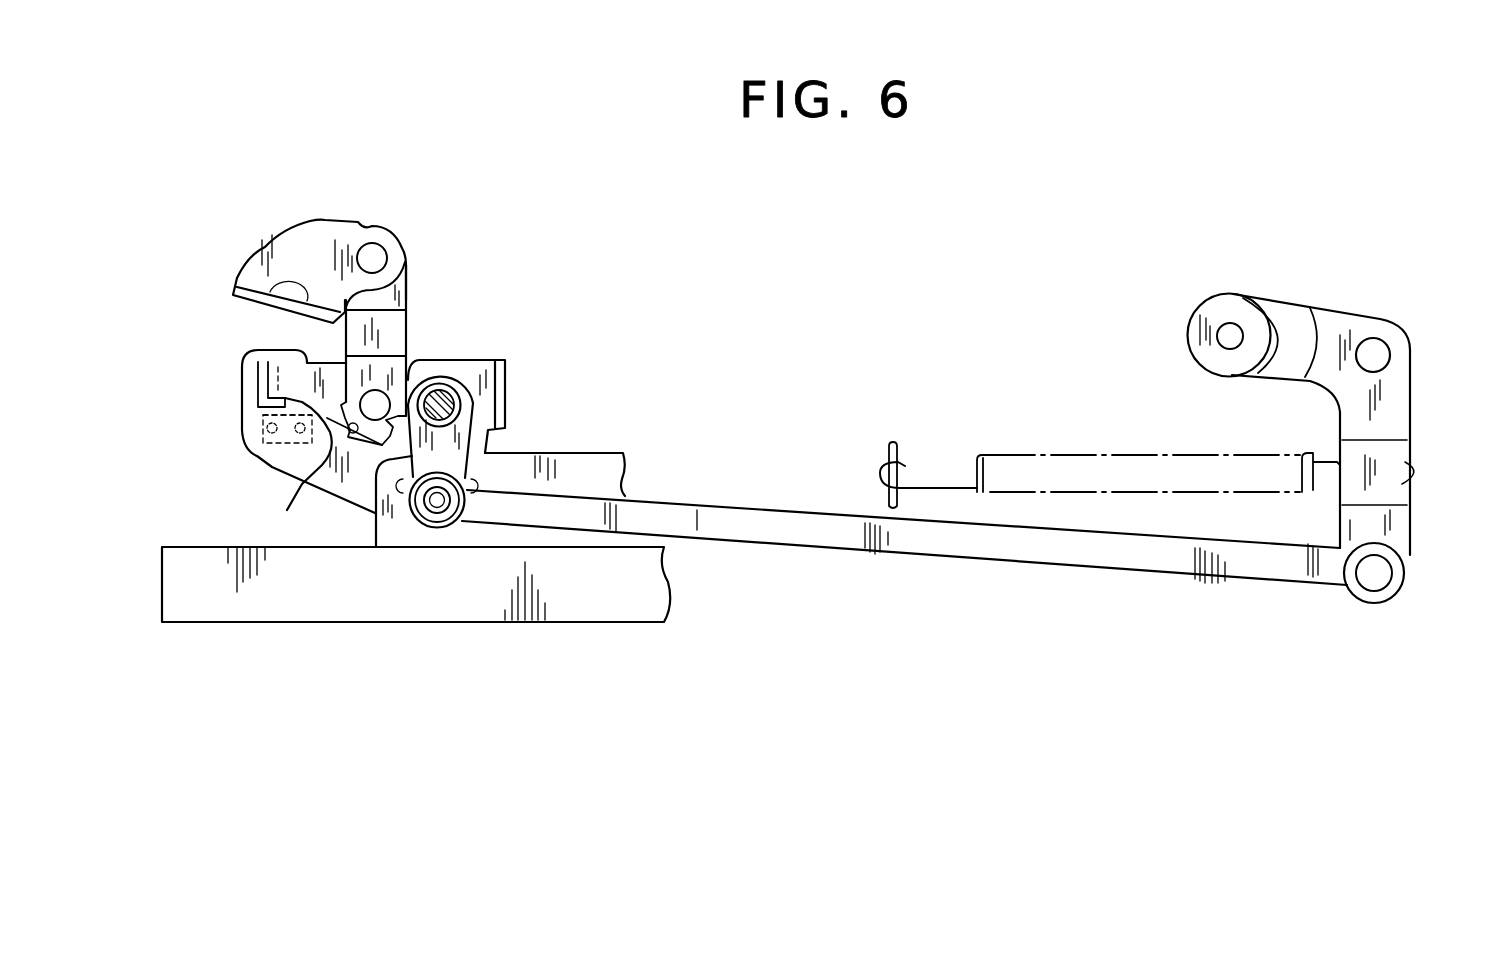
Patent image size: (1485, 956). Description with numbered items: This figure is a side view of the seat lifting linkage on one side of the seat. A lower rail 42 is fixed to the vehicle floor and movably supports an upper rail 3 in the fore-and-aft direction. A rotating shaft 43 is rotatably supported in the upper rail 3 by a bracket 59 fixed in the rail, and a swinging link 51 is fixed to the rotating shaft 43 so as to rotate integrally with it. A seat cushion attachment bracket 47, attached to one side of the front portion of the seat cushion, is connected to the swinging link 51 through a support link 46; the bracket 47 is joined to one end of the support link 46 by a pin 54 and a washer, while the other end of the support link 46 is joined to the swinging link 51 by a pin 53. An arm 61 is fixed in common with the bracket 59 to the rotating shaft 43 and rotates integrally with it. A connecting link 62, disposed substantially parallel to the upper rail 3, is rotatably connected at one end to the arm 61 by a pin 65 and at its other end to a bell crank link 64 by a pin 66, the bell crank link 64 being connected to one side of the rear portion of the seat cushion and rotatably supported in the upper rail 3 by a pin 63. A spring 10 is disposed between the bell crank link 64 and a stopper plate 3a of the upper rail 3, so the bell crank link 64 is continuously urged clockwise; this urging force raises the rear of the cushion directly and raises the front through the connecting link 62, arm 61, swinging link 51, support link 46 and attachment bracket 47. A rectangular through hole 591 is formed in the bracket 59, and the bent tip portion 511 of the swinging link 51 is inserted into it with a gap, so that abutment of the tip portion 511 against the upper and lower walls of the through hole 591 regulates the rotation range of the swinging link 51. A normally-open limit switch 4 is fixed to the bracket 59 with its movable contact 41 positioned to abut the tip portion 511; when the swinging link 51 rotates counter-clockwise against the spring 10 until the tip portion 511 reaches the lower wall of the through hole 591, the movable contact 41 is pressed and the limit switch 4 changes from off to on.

The upper rail 3 is at (568, 462).
The stopper plate 3a is at (893, 440).
The limit switch 4 is at (262, 437).
The spring 10 is at (1038, 445).
The movable contact 41 is at (262, 413).
The lower rail 42 is at (203, 560).
The rotating shaft 43 is at (446, 399).
The support link 46 is at (390, 335).
The seat cushion attachment bracket 47 is at (319, 247).
The swinging link 51 is at (318, 466).
The pin 53 is at (383, 446).
The pin 54 is at (380, 257).
The bracket 59 is at (478, 368).
The arm 61 is at (452, 460).
The connecting link 62 is at (847, 537).
The pin 63 is at (1377, 352).
The bell crank link 64 is at (1347, 332).
The pin 65 is at (438, 508).
The pin 66 is at (1378, 577).
The tip portion 511 is at (268, 362).
The through hole 591 is at (258, 380).